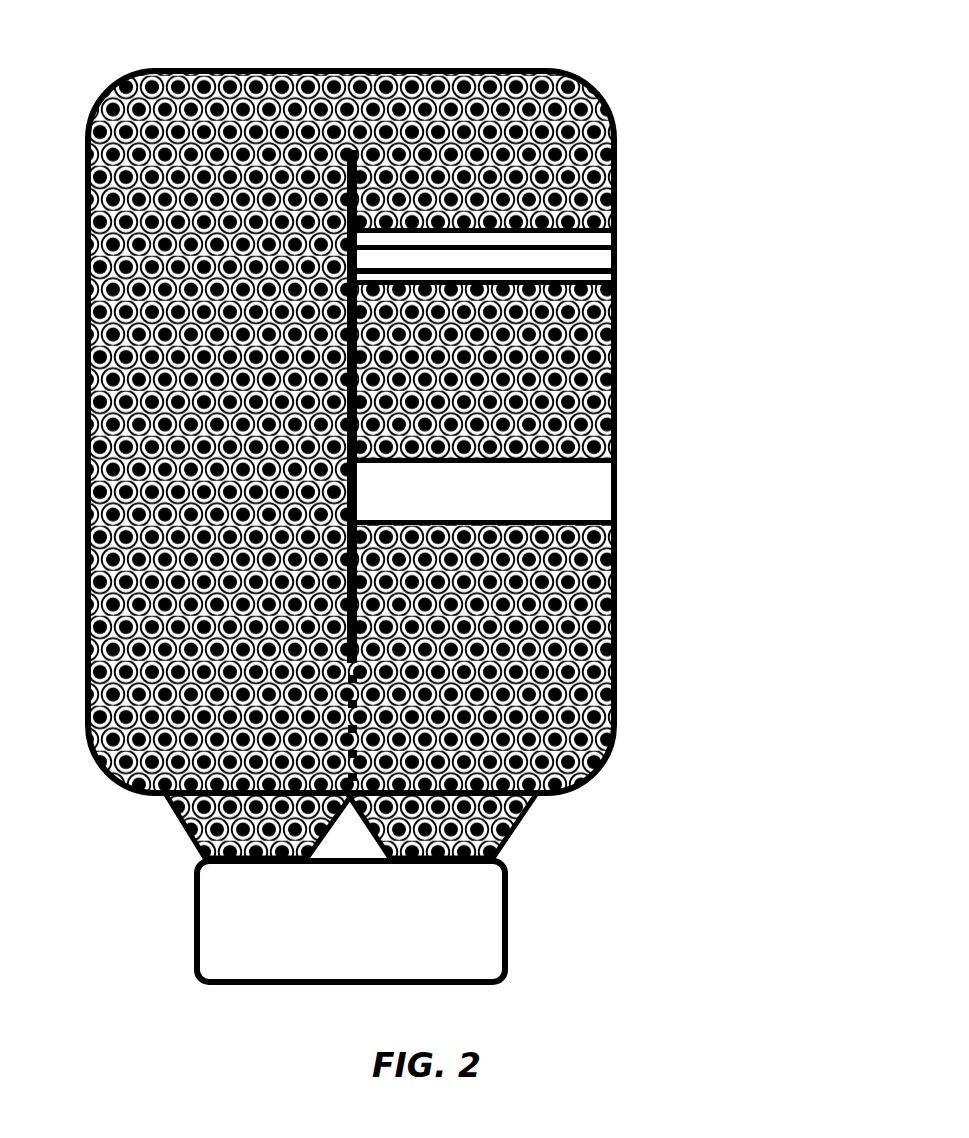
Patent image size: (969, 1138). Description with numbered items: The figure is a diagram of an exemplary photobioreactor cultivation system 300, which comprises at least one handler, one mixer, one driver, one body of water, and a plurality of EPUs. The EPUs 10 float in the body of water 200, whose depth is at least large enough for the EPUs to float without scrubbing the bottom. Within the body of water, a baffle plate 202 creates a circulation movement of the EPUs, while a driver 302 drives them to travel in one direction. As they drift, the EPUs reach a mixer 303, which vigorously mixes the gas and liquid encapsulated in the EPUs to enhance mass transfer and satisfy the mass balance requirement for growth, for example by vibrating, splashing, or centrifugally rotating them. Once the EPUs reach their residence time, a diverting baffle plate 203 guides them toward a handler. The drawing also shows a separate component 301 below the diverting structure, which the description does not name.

The EPUs 10 is at (522, 823).
The body of water 200 is at (401, 497).
The baffle plate 202 is at (445, 72).
The diverting baffle plate 203 is at (263, 797).
The cultivation system 300 is at (703, 737).
The receiving tray 301 is at (508, 905).
The driver 302 is at (606, 260).
The mixer 303 is at (596, 500).